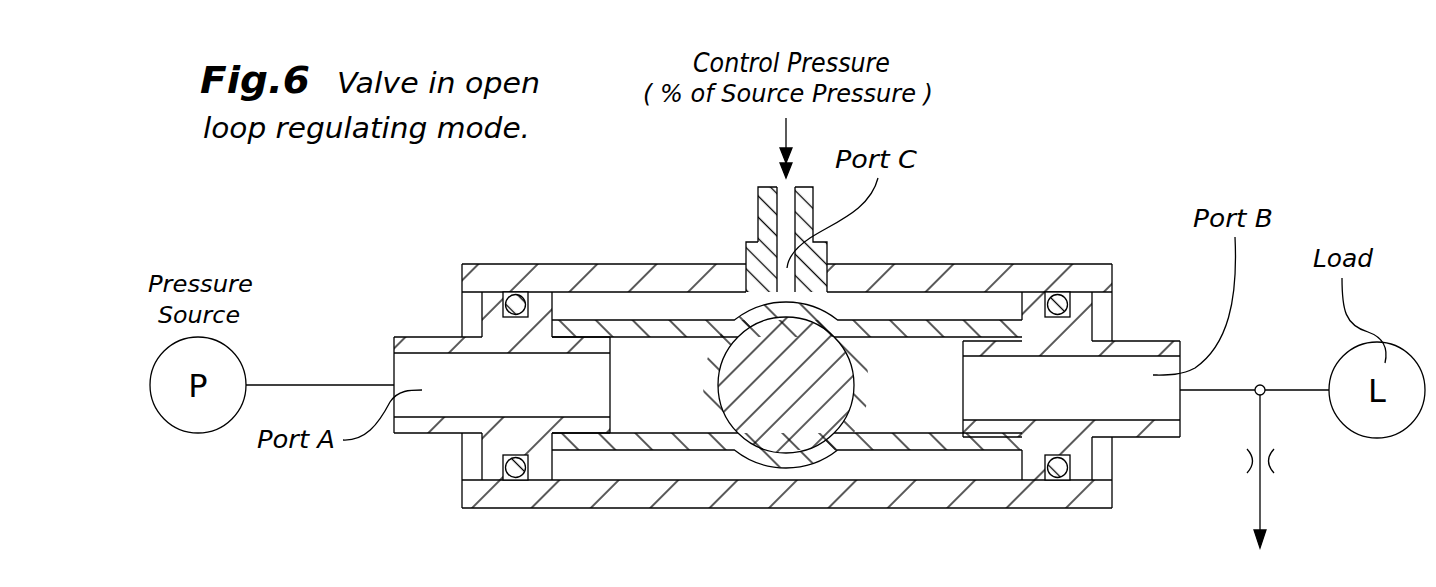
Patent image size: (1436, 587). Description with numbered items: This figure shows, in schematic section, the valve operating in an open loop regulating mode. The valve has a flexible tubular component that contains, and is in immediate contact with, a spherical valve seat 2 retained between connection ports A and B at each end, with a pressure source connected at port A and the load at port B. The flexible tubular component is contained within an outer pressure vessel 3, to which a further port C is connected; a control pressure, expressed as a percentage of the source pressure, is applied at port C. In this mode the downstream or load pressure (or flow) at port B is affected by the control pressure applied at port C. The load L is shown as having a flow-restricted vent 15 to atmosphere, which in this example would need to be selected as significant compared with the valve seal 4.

The spherical valve seat 2 is at (777, 378).
The outer pressure vessel 3 is at (935, 272).
The valve seal 4 is at (732, 343).
The flow-restricted vent 15 is at (1255, 475).